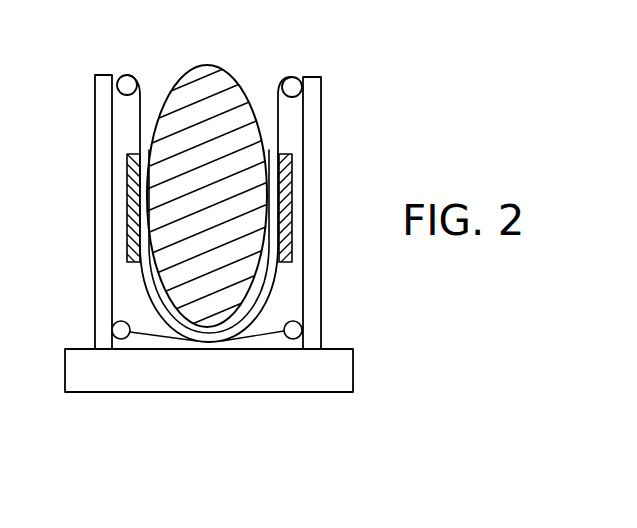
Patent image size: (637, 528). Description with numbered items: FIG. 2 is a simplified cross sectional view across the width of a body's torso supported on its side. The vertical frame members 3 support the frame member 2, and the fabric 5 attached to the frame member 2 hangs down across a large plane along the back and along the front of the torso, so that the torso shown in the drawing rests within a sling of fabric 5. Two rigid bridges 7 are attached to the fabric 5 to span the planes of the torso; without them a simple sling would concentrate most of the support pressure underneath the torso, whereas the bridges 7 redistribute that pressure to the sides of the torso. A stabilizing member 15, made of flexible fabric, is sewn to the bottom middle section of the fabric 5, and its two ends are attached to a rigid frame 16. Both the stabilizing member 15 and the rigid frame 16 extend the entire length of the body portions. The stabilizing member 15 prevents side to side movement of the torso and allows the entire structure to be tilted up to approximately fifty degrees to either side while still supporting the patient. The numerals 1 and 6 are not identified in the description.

The cylindrical workpiece 1 is at (207, 68).
The frame member 2 is at (295, 79).
The vertical frame members 3 is at (315, 118).
The fabric 5 is at (140, 108).
The belt 6 is at (275, 278).
The rigid bridges 7 is at (290, 197).
The stabilizing member 15 is at (158, 329).
The rigid frame 16 is at (302, 330).